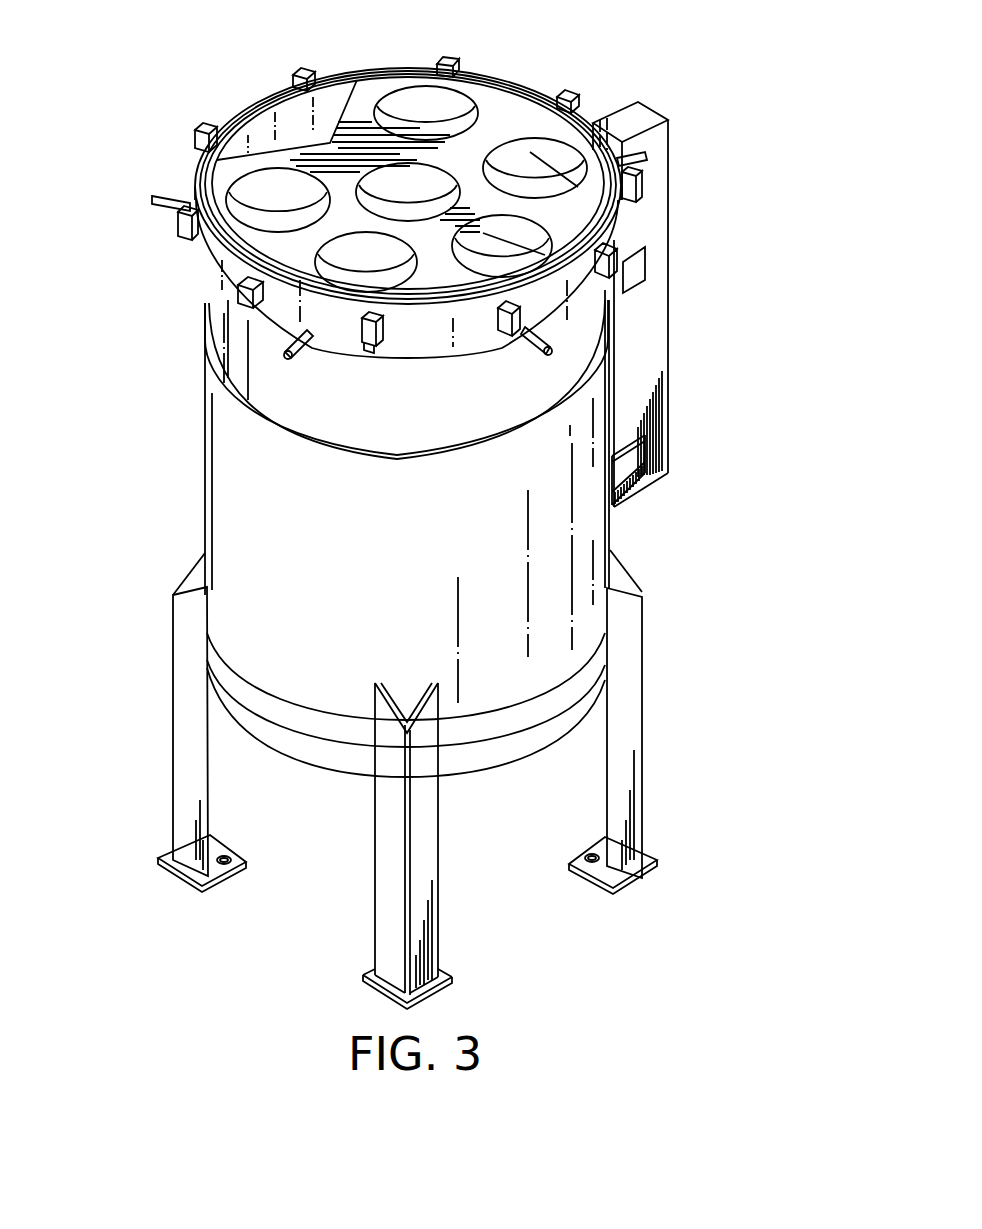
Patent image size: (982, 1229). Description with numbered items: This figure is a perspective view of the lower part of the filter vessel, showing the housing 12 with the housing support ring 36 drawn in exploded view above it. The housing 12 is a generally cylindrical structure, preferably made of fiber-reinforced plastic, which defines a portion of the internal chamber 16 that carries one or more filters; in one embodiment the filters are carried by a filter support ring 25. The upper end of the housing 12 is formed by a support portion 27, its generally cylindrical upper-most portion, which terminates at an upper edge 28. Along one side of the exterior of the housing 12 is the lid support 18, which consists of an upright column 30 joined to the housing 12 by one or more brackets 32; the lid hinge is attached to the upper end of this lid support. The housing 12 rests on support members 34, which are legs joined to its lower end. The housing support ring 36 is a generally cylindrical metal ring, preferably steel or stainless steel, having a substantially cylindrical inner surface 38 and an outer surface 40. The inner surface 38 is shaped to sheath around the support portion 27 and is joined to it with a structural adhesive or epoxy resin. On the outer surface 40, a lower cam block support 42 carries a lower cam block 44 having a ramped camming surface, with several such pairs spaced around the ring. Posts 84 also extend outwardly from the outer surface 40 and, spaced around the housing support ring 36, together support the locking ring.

The housing 12 is at (583, 537).
The internal chamber 16 is at (577, 363).
The lid support 18 is at (668, 167).
The filter support ring 25 is at (495, 100).
The support portion 27 is at (223, 415).
The upper edge 28 is at (213, 317).
The upright column 30 is at (650, 302).
The brackets 32 is at (640, 263).
The support members 34 is at (185, 730).
The housing support ring 36 is at (182, 142).
The inner surface 38 is at (290, 108).
The outer surface 40 is at (207, 254).
The lower cam block support 42 is at (380, 335).
The lower cam block 44 is at (368, 348).
The post 84 is at (296, 352).